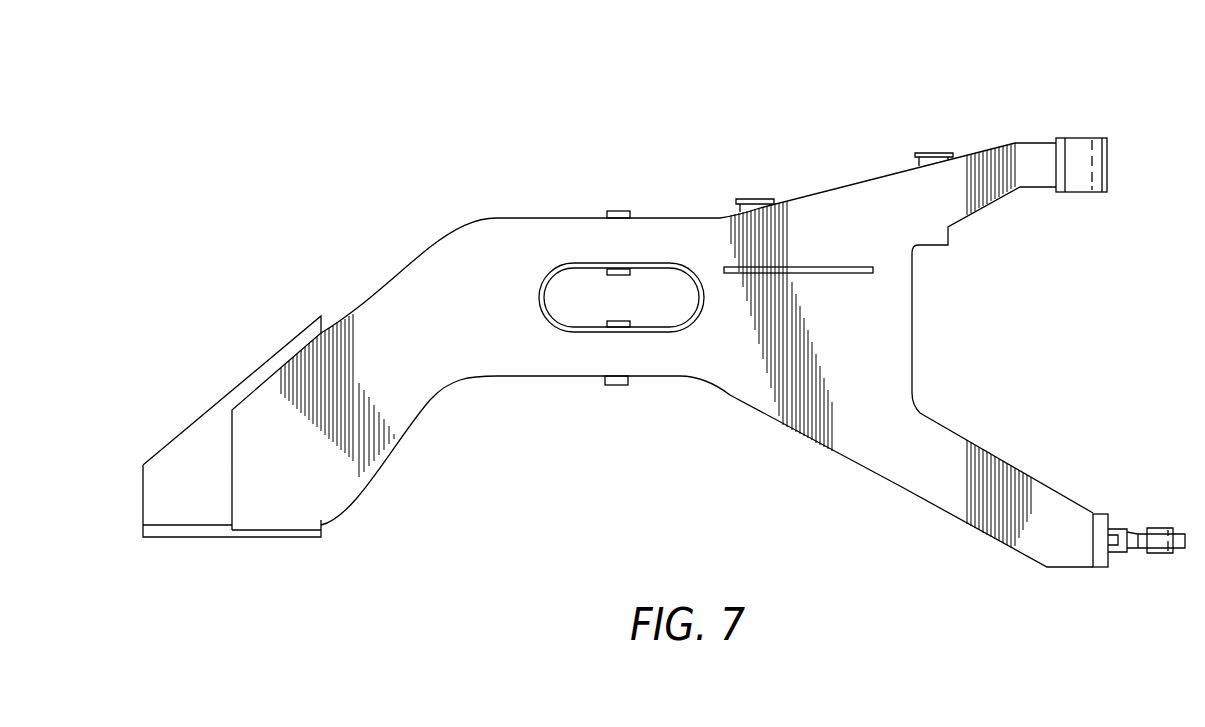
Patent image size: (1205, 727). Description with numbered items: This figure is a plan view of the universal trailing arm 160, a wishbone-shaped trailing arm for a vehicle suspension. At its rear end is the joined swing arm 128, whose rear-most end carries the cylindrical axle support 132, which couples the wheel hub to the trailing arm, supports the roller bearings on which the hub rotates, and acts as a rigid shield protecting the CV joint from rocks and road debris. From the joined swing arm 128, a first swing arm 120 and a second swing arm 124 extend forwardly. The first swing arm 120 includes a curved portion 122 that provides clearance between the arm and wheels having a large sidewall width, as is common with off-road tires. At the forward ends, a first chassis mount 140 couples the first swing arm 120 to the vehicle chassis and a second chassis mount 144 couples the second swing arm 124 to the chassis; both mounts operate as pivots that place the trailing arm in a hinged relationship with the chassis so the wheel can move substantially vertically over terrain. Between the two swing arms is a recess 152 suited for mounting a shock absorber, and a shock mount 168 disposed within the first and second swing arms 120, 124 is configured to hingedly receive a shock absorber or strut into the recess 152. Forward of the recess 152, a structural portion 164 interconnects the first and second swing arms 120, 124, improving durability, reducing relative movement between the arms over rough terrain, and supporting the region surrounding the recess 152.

The universal trailing arm 160 is at (375, 85).
The cylindrical axle support 132 is at (173, 467).
The joined swing arm 128 is at (400, 313).
The recess 152 is at (580, 270).
The shock mount 168 is at (619, 211).
The curved portion 122 is at (700, 380).
The second swing arm 124 is at (963, 173).
The second chassis mount 144 is at (1082, 178).
The structural portion 164 is at (883, 322).
The first swing arm 120 is at (965, 502).
The first chassis mount 140 is at (1155, 553).